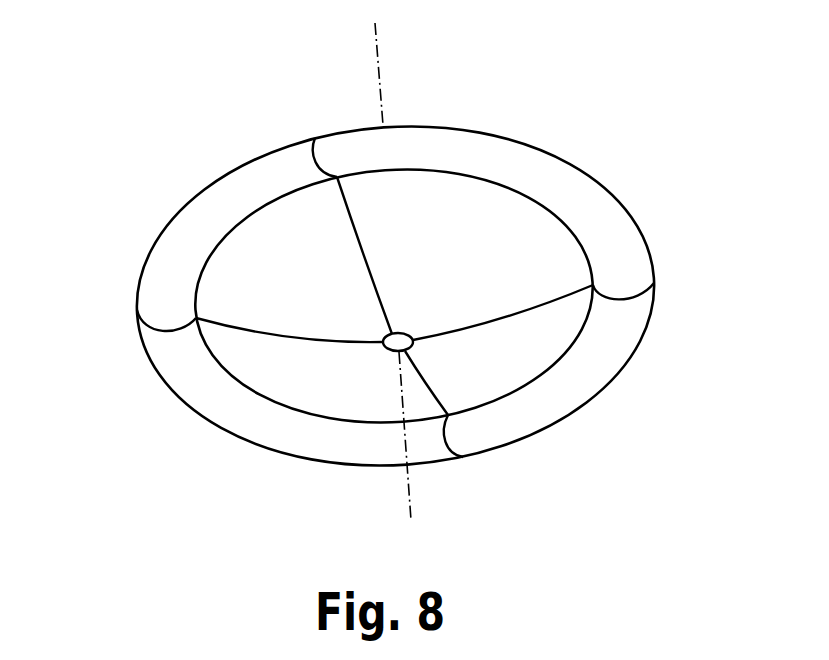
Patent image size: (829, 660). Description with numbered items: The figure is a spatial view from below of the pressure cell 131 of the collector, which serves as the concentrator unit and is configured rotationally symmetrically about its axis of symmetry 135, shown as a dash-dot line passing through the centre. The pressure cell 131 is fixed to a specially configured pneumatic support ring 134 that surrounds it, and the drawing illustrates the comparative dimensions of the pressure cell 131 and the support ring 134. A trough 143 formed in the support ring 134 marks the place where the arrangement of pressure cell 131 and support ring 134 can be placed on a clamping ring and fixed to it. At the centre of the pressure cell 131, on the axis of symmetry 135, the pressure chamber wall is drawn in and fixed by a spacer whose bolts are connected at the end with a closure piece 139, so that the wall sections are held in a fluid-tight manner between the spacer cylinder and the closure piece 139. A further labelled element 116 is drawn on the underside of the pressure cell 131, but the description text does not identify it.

The axis of symmetry 135 is at (380, 76).
The support ring 134 is at (563, 190).
The trough 143 is at (207, 262).
The web panel 116 is at (525, 347).
The pressure cell 131 is at (277, 373).
The closure piece 139 is at (403, 346).